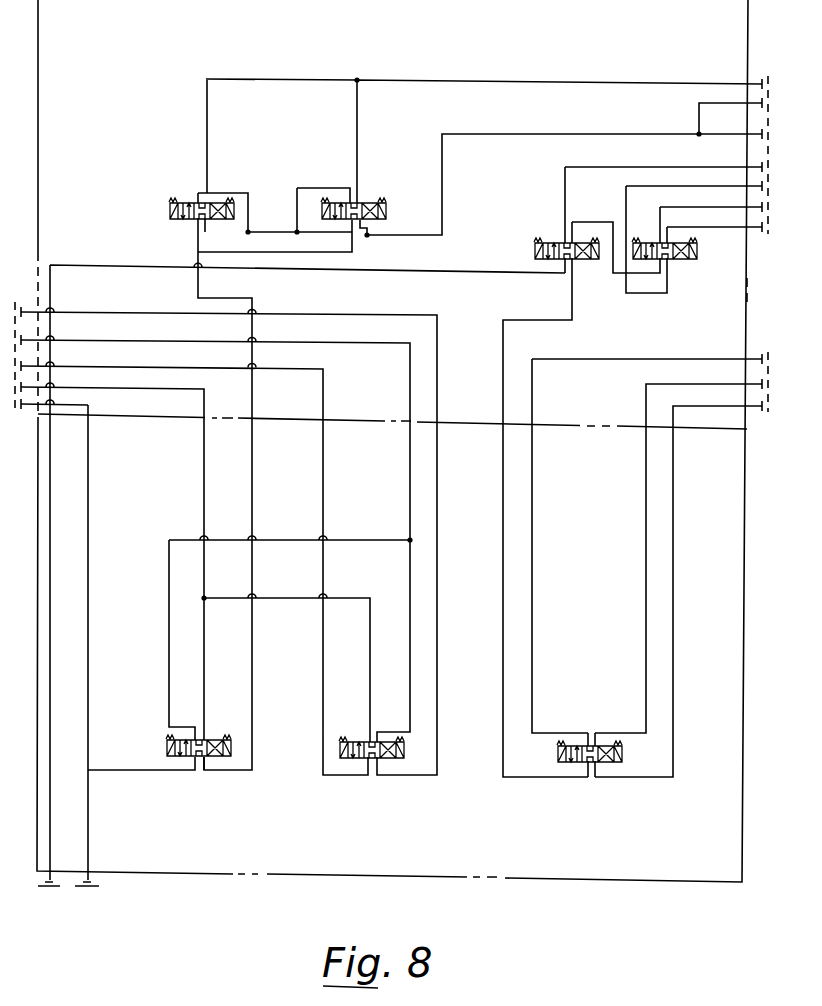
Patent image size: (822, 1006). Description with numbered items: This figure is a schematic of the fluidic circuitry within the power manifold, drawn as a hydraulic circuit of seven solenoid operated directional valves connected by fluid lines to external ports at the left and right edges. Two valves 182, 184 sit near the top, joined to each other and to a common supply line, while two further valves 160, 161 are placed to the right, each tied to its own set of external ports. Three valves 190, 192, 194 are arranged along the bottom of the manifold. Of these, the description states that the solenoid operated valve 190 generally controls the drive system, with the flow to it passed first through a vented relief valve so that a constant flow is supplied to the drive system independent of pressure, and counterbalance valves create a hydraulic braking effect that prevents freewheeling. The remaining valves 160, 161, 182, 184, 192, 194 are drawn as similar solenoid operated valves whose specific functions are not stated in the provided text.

The solenoid operated directional control valve 160 is at (550, 234).
The solenoid operated directional control valve 161 is at (686, 268).
The solenoid operated directional control valve 182 is at (217, 196).
The solenoid operated directional control valve 184 is at (365, 198).
The solenoid operated valve 190 is at (213, 765).
The solenoid operated directional control valve 192 is at (391, 766).
The solenoid operated directional control valve 194 is at (615, 771).